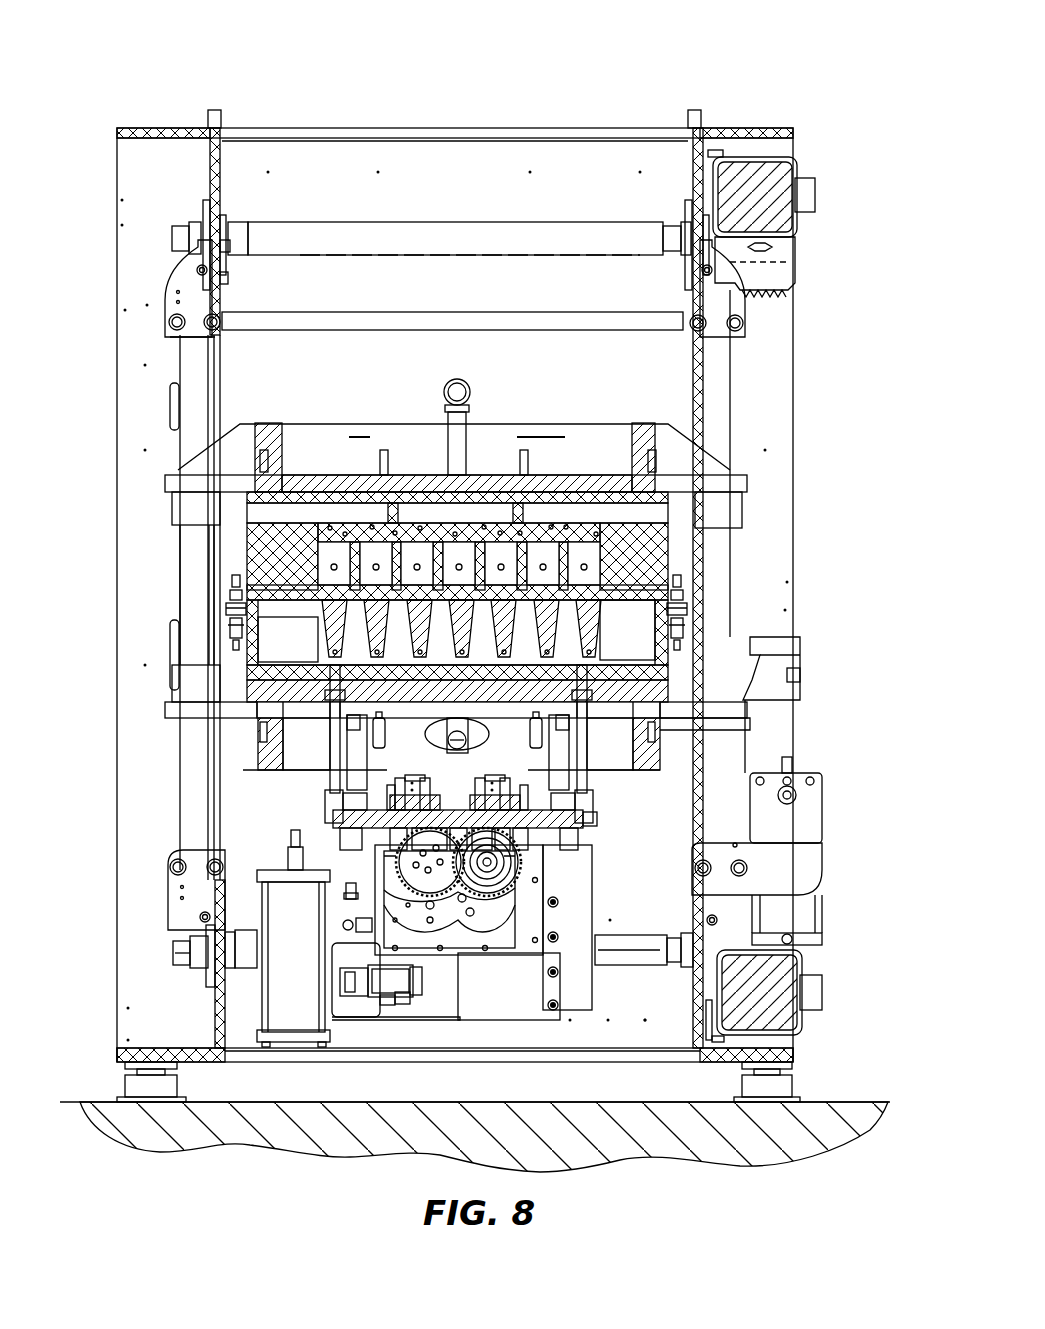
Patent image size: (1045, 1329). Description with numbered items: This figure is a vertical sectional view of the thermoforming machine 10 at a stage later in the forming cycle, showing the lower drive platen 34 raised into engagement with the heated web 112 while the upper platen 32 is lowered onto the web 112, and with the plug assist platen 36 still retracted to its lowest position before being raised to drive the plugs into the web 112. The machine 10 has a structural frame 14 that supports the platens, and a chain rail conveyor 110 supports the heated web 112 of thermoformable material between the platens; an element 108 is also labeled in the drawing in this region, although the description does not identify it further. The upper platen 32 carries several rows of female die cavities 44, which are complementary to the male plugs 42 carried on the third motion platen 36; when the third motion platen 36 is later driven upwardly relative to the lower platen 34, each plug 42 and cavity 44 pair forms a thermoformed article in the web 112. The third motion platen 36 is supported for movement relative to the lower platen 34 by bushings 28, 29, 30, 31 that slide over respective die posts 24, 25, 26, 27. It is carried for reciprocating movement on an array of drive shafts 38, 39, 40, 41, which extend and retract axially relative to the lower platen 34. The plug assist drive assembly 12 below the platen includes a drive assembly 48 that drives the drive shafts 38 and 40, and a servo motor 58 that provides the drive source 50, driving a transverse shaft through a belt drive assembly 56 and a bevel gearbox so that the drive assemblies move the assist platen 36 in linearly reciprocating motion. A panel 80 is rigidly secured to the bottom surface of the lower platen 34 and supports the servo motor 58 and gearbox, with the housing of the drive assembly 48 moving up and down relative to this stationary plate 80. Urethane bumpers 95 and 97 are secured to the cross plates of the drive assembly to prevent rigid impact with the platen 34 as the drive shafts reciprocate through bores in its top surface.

The thermoforming machine 10 is at (748, 112).
The third motion plug assist drive assembly 12 is at (192, 843).
The structural frame 14 is at (176, 128).
The die post 24 is at (372, 830).
The die post 25 is at (575, 805).
The die post 26 is at (413, 820).
The die post 27 is at (613, 816).
The bushing 28 is at (352, 780).
The bushing 29 is at (568, 785).
The bushing 30 is at (279, 756).
The bushing 31 is at (610, 756).
The upper platen 32 is at (240, 455).
The lower platen 34 is at (200, 712).
The third motion platen 36 is at (425, 700).
The drive shaft 38 is at (251, 744).
The drive shaft 39 is at (288, 768).
The drive shaft 40 is at (668, 736).
The drive shaft 41 is at (595, 760).
The male plug 42 is at (338, 640).
The female die cavity 44 is at (390, 555).
The drive assembly 48 is at (478, 928).
The drive source 50 is at (242, 910).
The belt drive assembly 56 is at (598, 1000).
The servo motor 58 is at (365, 1015).
The panel 80 is at (522, 997).
The urethane bumper 95 is at (372, 912).
The urethane bumper 97 is at (392, 795).
The nozzle chamber 108 is at (620, 620).
The chain rail conveyor 110 is at (232, 616).
The heated web 112 is at (302, 625).